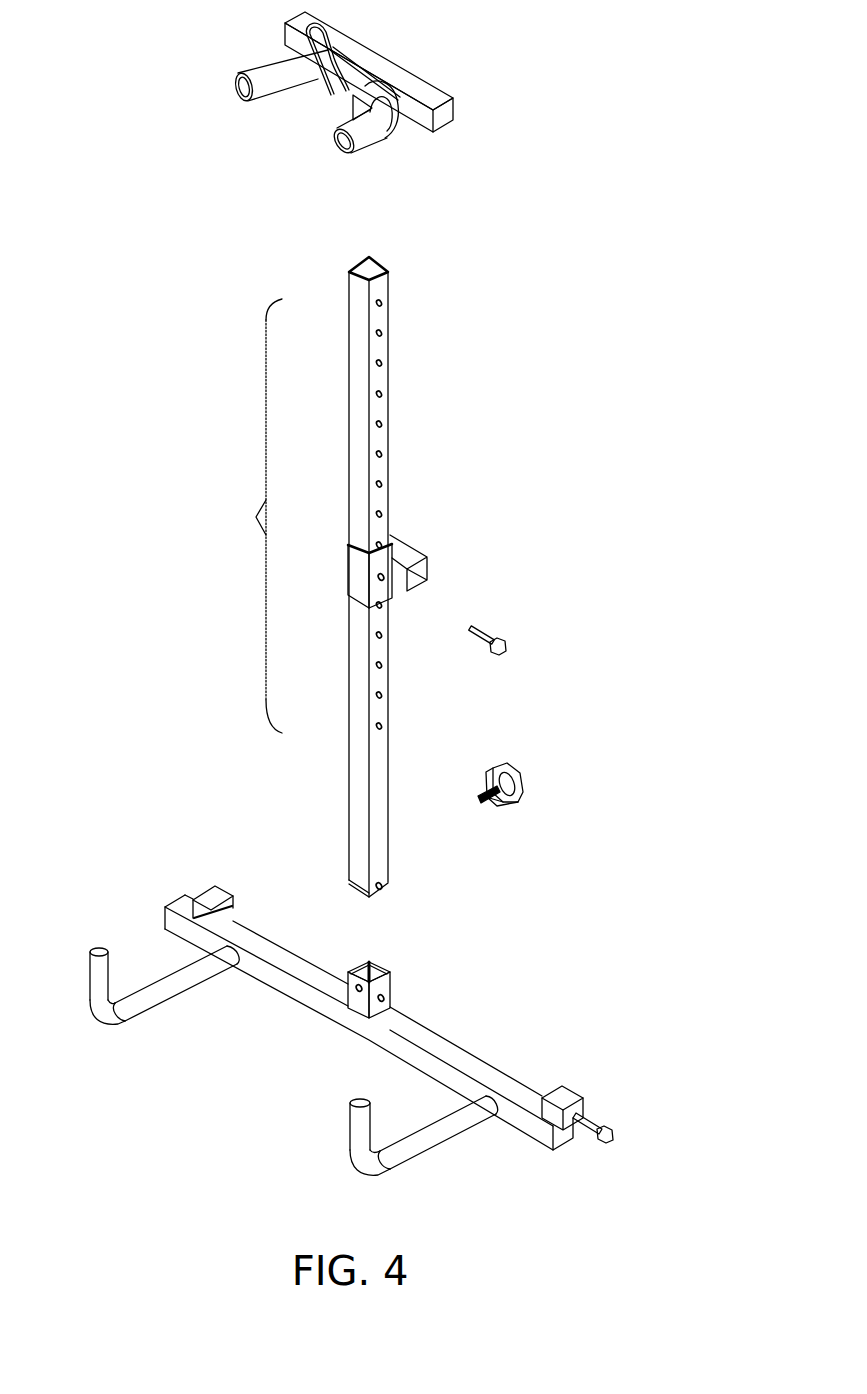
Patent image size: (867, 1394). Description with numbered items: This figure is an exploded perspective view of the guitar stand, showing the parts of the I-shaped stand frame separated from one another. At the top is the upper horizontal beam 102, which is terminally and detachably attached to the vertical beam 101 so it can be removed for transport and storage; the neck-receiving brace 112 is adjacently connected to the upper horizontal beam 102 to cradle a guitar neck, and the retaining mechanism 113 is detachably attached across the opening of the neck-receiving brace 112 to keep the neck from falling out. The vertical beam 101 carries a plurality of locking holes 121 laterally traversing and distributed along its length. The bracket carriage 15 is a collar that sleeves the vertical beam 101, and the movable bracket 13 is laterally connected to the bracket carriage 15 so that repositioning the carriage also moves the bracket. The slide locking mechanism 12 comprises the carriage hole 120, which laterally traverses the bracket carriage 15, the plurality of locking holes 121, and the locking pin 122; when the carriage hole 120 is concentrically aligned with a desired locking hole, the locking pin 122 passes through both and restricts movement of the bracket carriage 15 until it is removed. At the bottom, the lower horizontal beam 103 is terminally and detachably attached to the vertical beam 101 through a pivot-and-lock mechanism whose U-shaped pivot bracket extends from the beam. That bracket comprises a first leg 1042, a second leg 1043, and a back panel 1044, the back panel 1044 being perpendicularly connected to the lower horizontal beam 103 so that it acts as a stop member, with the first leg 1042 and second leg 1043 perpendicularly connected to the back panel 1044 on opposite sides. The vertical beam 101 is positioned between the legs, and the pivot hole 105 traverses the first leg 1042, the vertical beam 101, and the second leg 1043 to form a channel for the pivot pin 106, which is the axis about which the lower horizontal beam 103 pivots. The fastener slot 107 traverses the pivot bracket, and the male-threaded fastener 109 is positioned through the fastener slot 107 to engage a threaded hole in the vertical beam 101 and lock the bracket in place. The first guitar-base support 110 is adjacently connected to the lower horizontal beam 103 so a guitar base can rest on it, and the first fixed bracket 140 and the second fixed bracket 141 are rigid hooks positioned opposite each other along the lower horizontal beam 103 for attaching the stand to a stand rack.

The upper horizontal beam 102 is at (413, 82).
The retaining mechanism 113 is at (278, 84).
The neck-receiving brace 112 is at (359, 143).
The plurality of locking holes 121 is at (381, 333).
The vertical beam 101 is at (365, 577).
The slide locking mechanism 12 is at (241, 516).
The movable bracket 13 is at (412, 556).
The bracket carriage 15 is at (354, 578).
The carriage hole 120 is at (383, 580).
The locking pin 122 is at (500, 652).
The male-threaded fastener 109 is at (526, 800).
The second fixed bracket 141 is at (218, 892).
The pivot hole 105 is at (383, 887).
The back panel 1044 is at (372, 962).
The first leg 1042 is at (356, 978).
The fastener slot 107 is at (374, 959).
The second leg 1043 is at (388, 992).
The lower horizontal beam 103 is at (482, 1073).
The first fixed bracket 140 is at (568, 1094).
The pivot pin 106 is at (600, 1118).
The first guitar-base support 110 is at (158, 999).